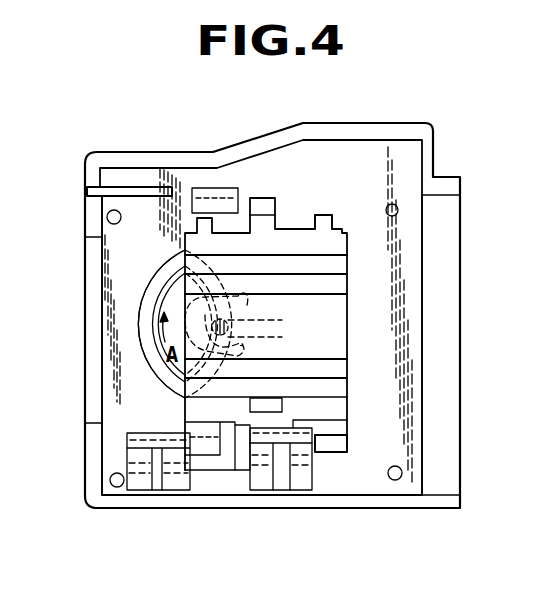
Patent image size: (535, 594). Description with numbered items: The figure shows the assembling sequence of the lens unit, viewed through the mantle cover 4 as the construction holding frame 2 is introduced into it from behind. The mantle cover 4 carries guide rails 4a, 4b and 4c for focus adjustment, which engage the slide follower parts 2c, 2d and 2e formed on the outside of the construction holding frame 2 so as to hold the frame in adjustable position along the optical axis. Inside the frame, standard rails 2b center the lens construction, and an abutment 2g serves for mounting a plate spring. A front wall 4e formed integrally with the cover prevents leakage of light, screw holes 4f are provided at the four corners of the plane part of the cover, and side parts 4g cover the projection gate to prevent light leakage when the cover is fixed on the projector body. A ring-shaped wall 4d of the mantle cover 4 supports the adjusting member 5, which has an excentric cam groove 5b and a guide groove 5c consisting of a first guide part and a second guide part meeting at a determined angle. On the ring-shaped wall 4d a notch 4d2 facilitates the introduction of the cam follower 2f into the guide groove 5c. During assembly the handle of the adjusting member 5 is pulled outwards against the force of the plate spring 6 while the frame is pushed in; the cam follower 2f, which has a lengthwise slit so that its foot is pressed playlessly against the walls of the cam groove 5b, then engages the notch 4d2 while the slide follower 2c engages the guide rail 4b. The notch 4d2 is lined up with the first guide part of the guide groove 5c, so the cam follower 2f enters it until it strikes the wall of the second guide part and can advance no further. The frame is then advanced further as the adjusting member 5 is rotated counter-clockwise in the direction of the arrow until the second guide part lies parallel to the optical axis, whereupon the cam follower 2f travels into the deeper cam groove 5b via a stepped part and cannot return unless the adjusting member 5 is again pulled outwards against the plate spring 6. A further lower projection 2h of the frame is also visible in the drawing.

The mantle cover 4 is at (367, 157).
The guide rail 4a is at (158, 485).
The guide rail 4b is at (282, 482).
The guide rail 4c is at (213, 195).
The ring-shaped wall 4d is at (173, 390).
The notch 4d2 is at (298, 335).
The front wall 4e is at (93, 248).
The screw holes 4f is at (398, 208).
The side parts 4g is at (443, 252).
The construction holding frame 2 is at (337, 242).
The standard rails 2b is at (337, 280).
The slide follower part 2c is at (203, 450).
The slide follower part 2d is at (332, 450).
The slide follower part 2e is at (267, 203).
The cam follower 2f is at (292, 318).
The abutment 2g is at (327, 222).
The stop projection 2h is at (282, 410).
The adjusting member 5 is at (172, 280).
The excentric cam groove 5b is at (184, 313).
The guide groove 5c is at (263, 331).
The plate spring 6 is at (243, 462).